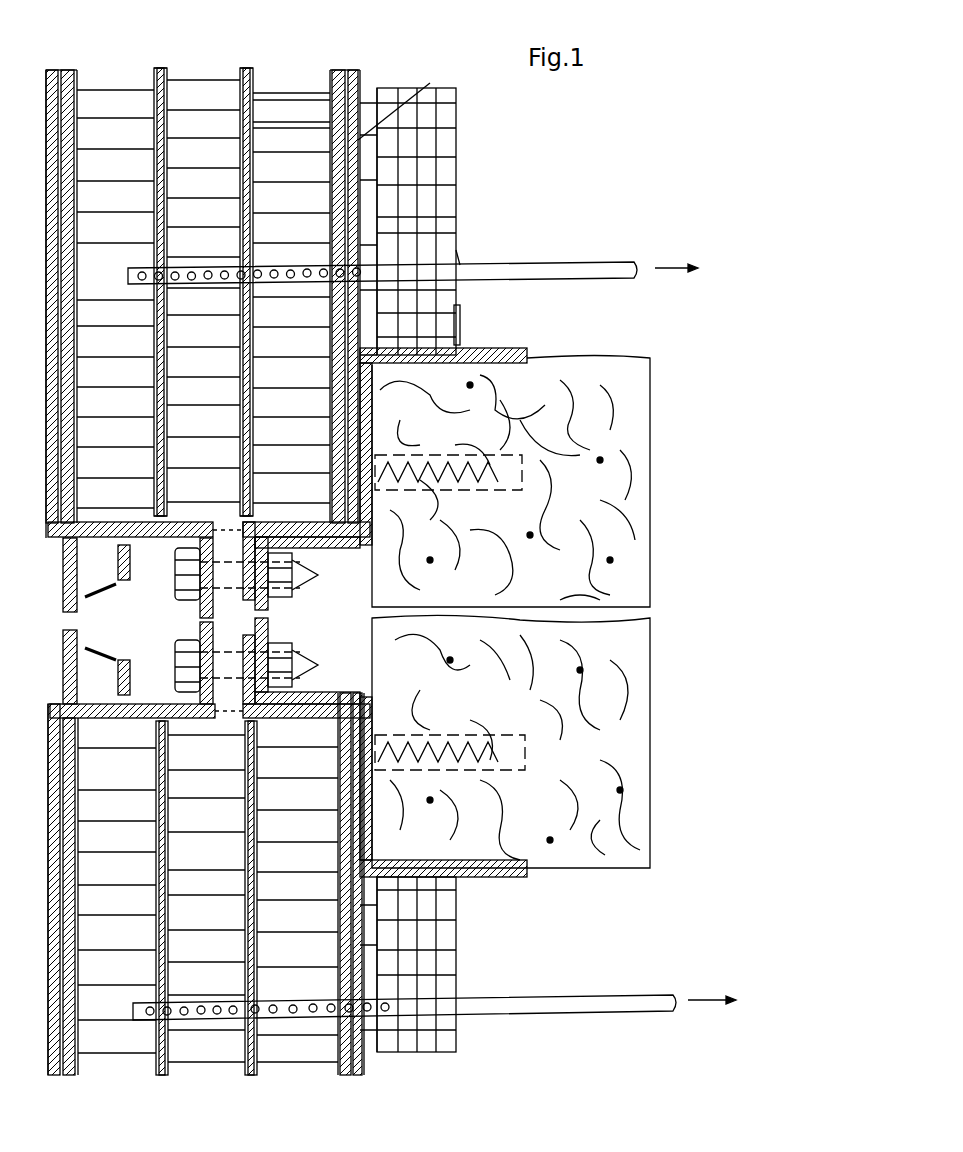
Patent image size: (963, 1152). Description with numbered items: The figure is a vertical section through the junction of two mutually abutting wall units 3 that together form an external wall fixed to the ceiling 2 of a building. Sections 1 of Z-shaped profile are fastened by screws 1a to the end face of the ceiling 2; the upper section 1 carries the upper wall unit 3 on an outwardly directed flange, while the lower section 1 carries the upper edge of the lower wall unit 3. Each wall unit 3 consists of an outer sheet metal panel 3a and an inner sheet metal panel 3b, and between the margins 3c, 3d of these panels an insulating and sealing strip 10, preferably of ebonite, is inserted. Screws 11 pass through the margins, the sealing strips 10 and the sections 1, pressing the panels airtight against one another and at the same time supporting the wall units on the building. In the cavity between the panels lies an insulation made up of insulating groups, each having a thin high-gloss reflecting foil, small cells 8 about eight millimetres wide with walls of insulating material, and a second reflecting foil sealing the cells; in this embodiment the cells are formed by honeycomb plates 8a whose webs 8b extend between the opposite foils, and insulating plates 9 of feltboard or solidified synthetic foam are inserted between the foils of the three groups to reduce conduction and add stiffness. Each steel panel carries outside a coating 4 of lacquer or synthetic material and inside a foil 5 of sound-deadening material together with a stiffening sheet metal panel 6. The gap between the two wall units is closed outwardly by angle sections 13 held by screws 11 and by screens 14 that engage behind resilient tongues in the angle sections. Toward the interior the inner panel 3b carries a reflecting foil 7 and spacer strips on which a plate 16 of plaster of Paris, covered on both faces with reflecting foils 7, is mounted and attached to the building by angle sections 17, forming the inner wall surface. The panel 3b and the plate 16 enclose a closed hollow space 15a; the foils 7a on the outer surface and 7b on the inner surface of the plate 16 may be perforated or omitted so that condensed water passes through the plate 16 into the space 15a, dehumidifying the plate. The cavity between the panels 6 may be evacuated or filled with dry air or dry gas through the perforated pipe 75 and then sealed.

The section of Z-shaped profile 1 is at (545, 353).
The screw 1a is at (455, 612).
The ceiling 2 is at (605, 355).
The wall unit 3 is at (42, 402).
The outer sheet metal panel 3a is at (52, 298).
The inner sheet metal panel 3b is at (356, 72).
The margin 3c is at (200, 606).
The margin 3d is at (252, 596).
The coating 4 is at (50, 228).
The foil of sound-deadening material 5 is at (66, 74).
The stiffening sheet metal panel 6 is at (70, 108).
The reflecting foil 7 is at (150, 200).
The foil 7a is at (458, 258).
The foil 7b is at (375, 148).
The cell 8 is at (165, 108).
The honeycomb plate 8a is at (258, 100).
The web 8b is at (292, 96).
The insulating plate 9 is at (160, 72).
The insulating and sealing strip 10 is at (227, 553).
The screw 11 is at (185, 582).
The angle section 13 is at (152, 545).
The screen 14 is at (64, 600).
The space 15a is at (370, 200).
The plate of plaster of Paris 16 is at (432, 140).
The angle section 17 is at (462, 318).
The perforated pipe 75 is at (590, 263).